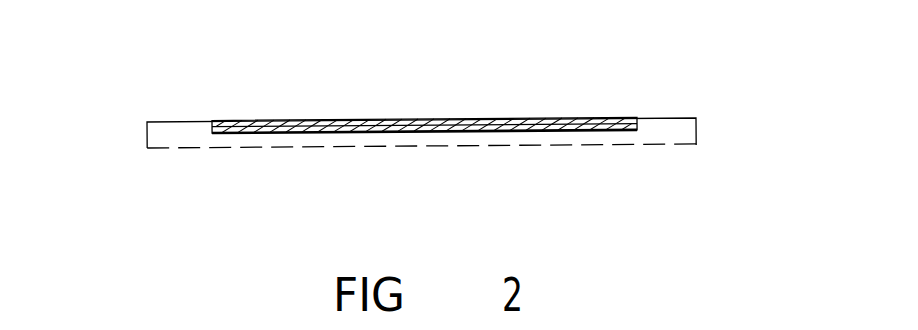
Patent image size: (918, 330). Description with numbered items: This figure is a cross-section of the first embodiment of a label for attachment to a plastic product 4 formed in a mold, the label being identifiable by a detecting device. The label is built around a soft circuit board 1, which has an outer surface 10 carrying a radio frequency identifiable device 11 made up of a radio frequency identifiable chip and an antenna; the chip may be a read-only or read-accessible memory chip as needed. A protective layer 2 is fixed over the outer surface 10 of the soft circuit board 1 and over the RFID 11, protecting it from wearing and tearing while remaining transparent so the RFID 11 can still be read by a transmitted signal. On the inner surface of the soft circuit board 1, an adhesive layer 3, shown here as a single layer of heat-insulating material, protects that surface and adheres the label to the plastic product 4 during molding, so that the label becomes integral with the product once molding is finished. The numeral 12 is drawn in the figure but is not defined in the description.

The soft circuit board 1 is at (467, 163).
The protective layer 2 is at (503, 96).
The adhesive layer 3 is at (425, 189).
The plastic product 4 is at (373, 170).
The outer surface 10 is at (609, 105).
The radio frequency identifiable device 11 is at (464, 121).
The lower layer 12 is at (571, 103).